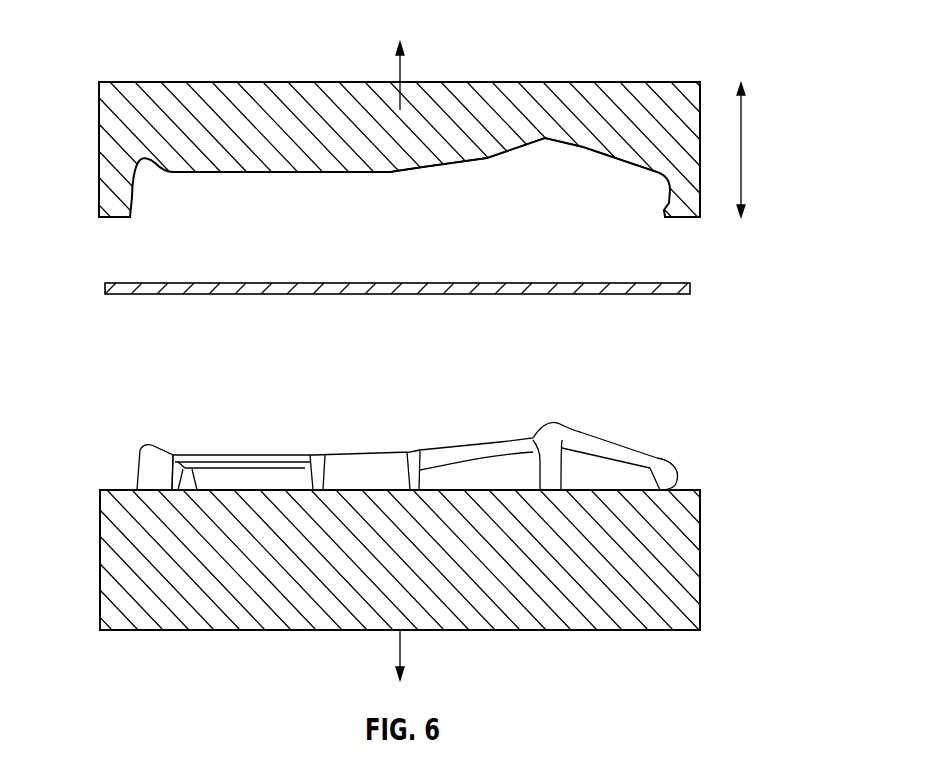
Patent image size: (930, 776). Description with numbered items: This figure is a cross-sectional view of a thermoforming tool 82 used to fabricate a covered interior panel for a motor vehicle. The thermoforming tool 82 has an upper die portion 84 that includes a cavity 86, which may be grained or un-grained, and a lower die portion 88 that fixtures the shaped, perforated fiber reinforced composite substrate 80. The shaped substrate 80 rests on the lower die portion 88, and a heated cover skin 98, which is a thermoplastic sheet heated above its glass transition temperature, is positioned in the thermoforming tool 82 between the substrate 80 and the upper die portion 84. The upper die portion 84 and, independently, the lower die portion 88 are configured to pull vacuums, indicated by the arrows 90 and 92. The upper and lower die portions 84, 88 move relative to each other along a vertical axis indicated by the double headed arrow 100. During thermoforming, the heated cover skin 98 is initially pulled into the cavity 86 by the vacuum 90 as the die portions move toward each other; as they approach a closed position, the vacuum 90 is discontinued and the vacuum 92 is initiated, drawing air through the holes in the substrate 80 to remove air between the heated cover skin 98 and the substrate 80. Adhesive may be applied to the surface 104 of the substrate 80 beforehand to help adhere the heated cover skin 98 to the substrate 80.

The shaped, perforated fiber reinforced composite substrate 80 is at (407, 449).
The thermoforming tool 82 is at (623, 53).
The upper die portion 84 is at (168, 98).
The cavity 86 is at (547, 174).
The lower die portion 88 is at (643, 622).
The vacuum 90 is at (403, 68).
The vacuum 92 is at (403, 648).
The heated cover skin 98 is at (106, 286).
The double headed arrow 100 is at (745, 150).
The surface 104 is at (228, 455).